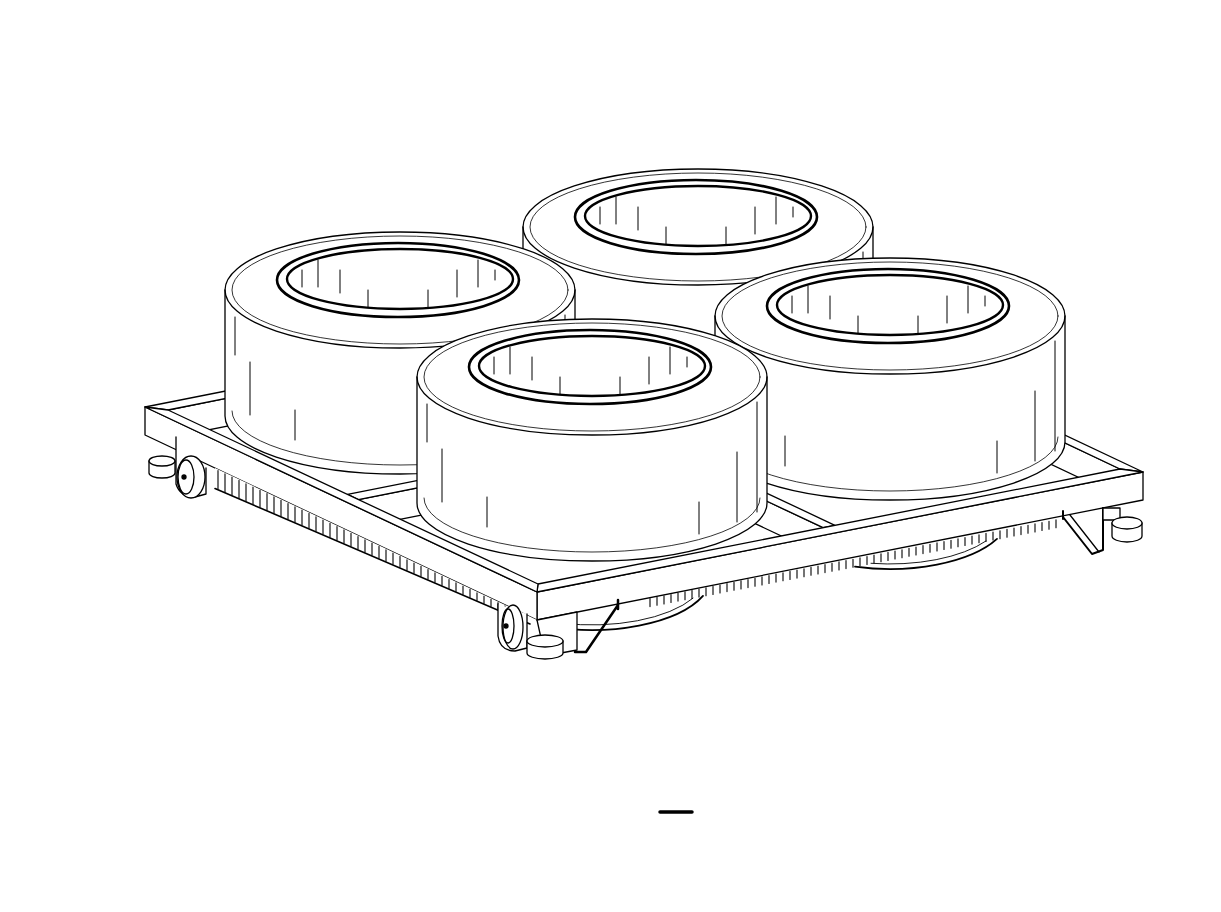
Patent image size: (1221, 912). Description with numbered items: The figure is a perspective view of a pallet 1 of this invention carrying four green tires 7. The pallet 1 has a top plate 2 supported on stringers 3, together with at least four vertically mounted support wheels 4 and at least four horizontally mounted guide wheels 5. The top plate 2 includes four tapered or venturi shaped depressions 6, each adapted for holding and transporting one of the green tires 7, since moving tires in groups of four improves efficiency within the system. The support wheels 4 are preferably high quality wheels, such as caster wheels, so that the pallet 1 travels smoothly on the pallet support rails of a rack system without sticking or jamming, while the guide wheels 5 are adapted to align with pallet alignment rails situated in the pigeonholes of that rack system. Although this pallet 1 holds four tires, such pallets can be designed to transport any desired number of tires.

The pallet 1 is at (164, 142).
The top plate 2 is at (178, 413).
The stringers 3 is at (352, 543).
The vertically mounted support wheels 4 is at (200, 489).
The horizontally mounted guide wheels 5 is at (160, 472).
The tapered or venturi shaped depression 6 is at (657, 608).
The green tires 7 is at (262, 265).